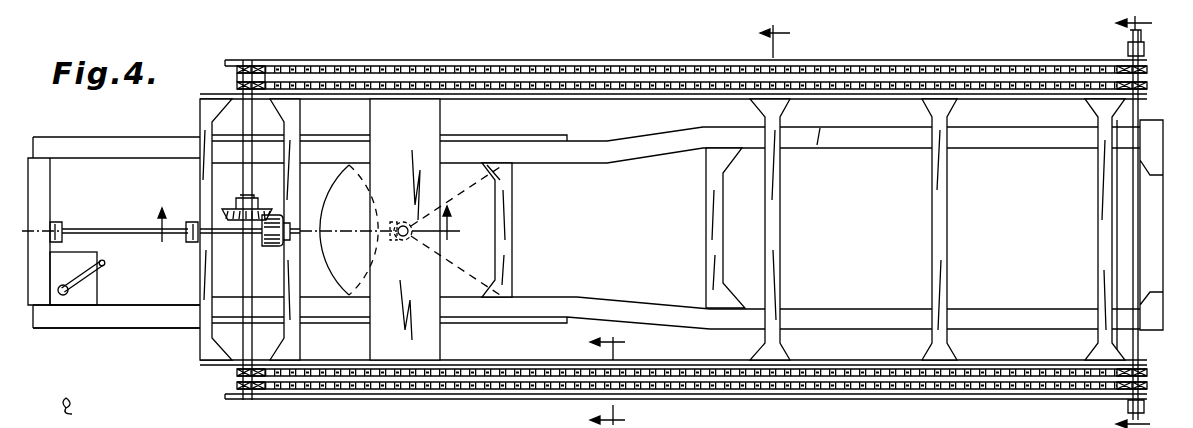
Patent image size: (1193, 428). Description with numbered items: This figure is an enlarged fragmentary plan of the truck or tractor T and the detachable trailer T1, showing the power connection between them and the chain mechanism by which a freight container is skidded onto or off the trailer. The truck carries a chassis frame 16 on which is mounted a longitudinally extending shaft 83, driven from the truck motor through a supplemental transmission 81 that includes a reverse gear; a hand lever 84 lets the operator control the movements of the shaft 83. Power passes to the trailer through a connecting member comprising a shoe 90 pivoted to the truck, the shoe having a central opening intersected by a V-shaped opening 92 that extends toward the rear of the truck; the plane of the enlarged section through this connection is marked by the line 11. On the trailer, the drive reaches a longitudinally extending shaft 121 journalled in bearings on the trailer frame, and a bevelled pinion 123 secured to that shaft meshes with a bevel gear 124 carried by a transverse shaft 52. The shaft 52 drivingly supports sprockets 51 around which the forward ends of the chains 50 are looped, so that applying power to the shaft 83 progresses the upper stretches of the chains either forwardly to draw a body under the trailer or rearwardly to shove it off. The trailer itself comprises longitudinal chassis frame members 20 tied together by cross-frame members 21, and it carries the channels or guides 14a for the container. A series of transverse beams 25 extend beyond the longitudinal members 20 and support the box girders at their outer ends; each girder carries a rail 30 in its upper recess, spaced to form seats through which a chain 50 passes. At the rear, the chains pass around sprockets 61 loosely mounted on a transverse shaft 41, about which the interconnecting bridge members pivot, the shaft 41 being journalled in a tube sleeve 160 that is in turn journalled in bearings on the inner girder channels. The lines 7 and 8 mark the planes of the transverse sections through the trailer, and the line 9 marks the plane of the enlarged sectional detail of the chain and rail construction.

The section line 7— 7 is at (767, 38).
The section line 8— 8 is at (1132, 222).
The section line 9— 9 is at (606, 374).
The section line 11— 11 is at (314, 221).
The channels or guides 14a is at (569, 60).
The chassis frame 16 is at (118, 328).
The longitudinal chassis frame members 20 is at (647, 300).
The cross-frame members 21 is at (706, 222).
The frame members or beams 25 is at (300, 331).
The rail 30 is at (478, 72).
The transverse shaft 41 is at (1128, 410).
The chain 50 is at (619, 72).
The sprockets 51 is at (256, 66).
The transverse shaft 52 is at (243, 275).
The sprockets 61 is at (1148, 70).
The supplemental transmission 81 is at (98, 291).
The longitudinally extending shaft 83 is at (90, 229).
The hand lever 84 is at (105, 262).
The shoe 90 is at (468, 280).
The V-shaped opening 92 is at (462, 184).
The longitudinally extending shaft 121 is at (352, 236).
The bevelled pinion 123 is at (278, 248).
The bevel gear 124 is at (252, 206).
The tube sleeve 160 is at (1133, 212).
The truck or tractor T is at (147, 140).
The trailer T1 is at (808, 152).